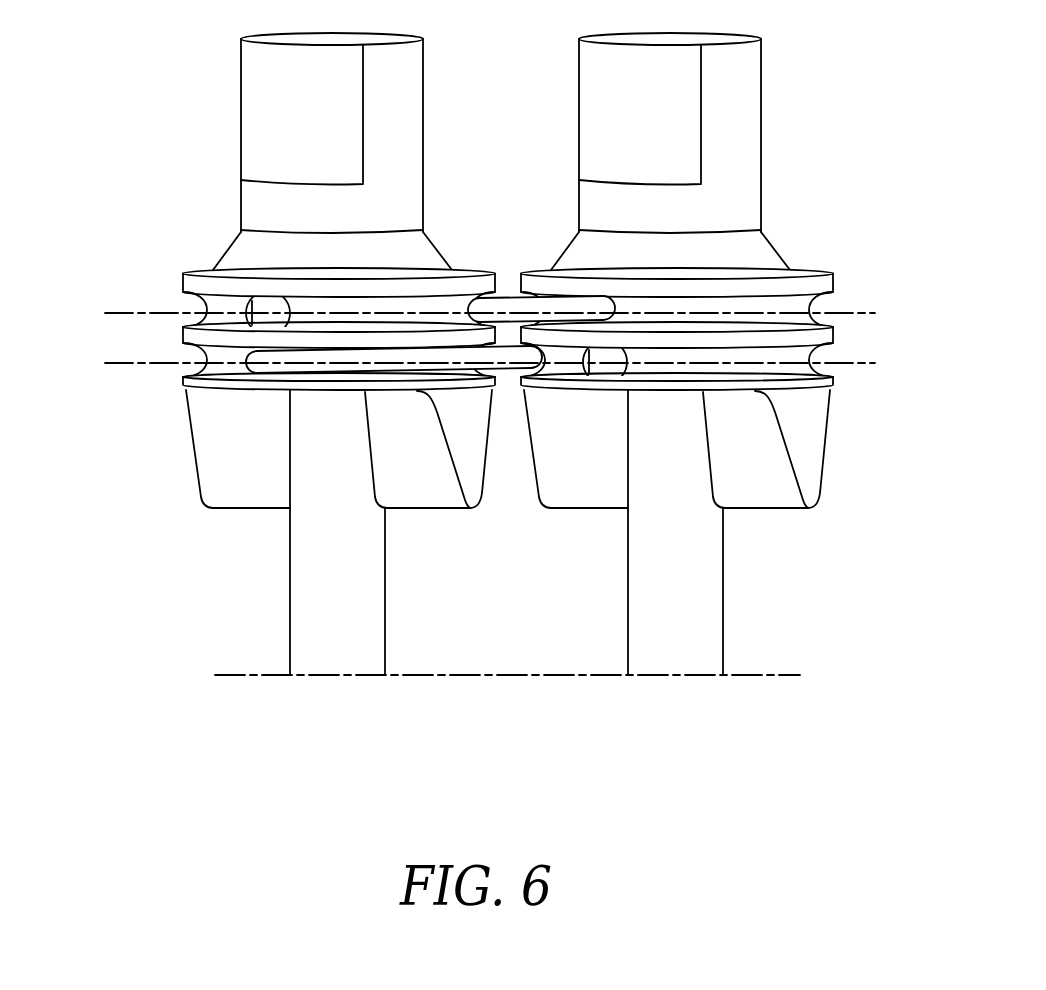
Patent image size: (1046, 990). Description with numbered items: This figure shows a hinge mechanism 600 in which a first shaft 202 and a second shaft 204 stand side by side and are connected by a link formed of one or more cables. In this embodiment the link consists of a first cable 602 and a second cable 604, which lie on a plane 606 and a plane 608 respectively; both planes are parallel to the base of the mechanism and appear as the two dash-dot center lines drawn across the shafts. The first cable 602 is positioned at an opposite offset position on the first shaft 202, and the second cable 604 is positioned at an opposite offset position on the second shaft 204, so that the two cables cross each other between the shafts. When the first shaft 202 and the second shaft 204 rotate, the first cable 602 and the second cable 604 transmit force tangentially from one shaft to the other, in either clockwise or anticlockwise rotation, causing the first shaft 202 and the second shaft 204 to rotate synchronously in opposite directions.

The first shaft 202 is at (253, 134).
The second shaft 204 is at (748, 115).
The hinge mechanism 600 is at (490, 397).
The first cable 602 is at (507, 293).
The second cable 604 is at (509, 358).
The plane 606 is at (141, 312).
The plane 608 is at (141, 365).